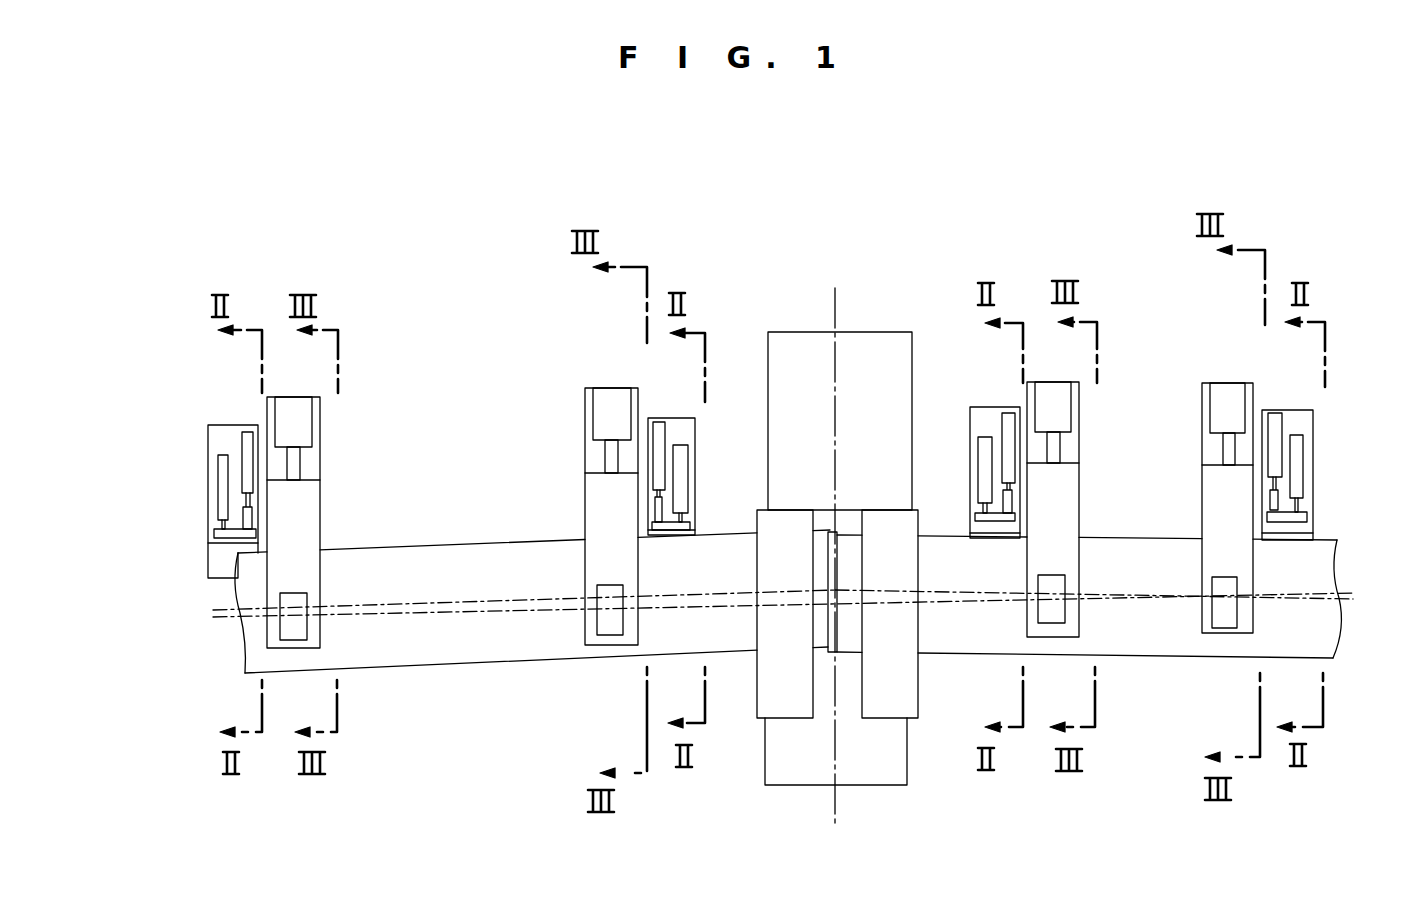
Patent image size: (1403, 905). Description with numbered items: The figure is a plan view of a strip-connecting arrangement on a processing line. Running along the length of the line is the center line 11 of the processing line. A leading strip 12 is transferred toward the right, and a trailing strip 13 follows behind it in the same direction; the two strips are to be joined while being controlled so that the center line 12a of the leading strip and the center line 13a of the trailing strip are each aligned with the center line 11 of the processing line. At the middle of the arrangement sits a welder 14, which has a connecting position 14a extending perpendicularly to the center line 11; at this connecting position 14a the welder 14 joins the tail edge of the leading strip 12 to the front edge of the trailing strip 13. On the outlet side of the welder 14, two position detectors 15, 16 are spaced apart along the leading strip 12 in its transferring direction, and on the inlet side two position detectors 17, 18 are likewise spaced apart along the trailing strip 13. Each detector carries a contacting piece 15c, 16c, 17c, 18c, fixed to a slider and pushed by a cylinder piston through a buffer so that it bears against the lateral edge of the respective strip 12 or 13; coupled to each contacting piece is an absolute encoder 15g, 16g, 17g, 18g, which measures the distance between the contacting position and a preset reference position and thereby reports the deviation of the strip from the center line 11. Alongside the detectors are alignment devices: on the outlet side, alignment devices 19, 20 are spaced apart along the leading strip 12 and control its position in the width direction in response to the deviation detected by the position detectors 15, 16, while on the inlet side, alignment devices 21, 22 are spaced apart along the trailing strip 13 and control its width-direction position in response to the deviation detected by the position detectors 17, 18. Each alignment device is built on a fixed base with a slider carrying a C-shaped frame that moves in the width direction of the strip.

The center line of processing line 11 is at (513, 613).
The leading strip 12 is at (1135, 658).
The center line of leading strip 12a is at (1125, 595).
The trailing strip 13 is at (448, 667).
The center line of trailing strip 13a is at (443, 605).
The welder 14 is at (883, 330).
The connecting position 14a is at (840, 307).
The position detector 15 is at (1277, 410).
The absolute encoder 15g is at (1295, 435).
The contacting piece 15c is at (1305, 520).
The position detector 16 is at (1008, 408).
The absolute encoder 16g is at (983, 437).
The contacting piece 16c is at (978, 517).
The position detector 17 is at (662, 420).
The absolute encoder 17g is at (680, 445).
The contacting piece 17c is at (690, 527).
The position detector 18 is at (244, 430).
The absolute encoder 18g is at (222, 458).
The contacting piece 18c is at (215, 530).
The alignment device 19 is at (1218, 383).
The alignment device 20 is at (1151, 416).
The alignment device 21 is at (583, 412).
The alignment device 22 is at (322, 430).